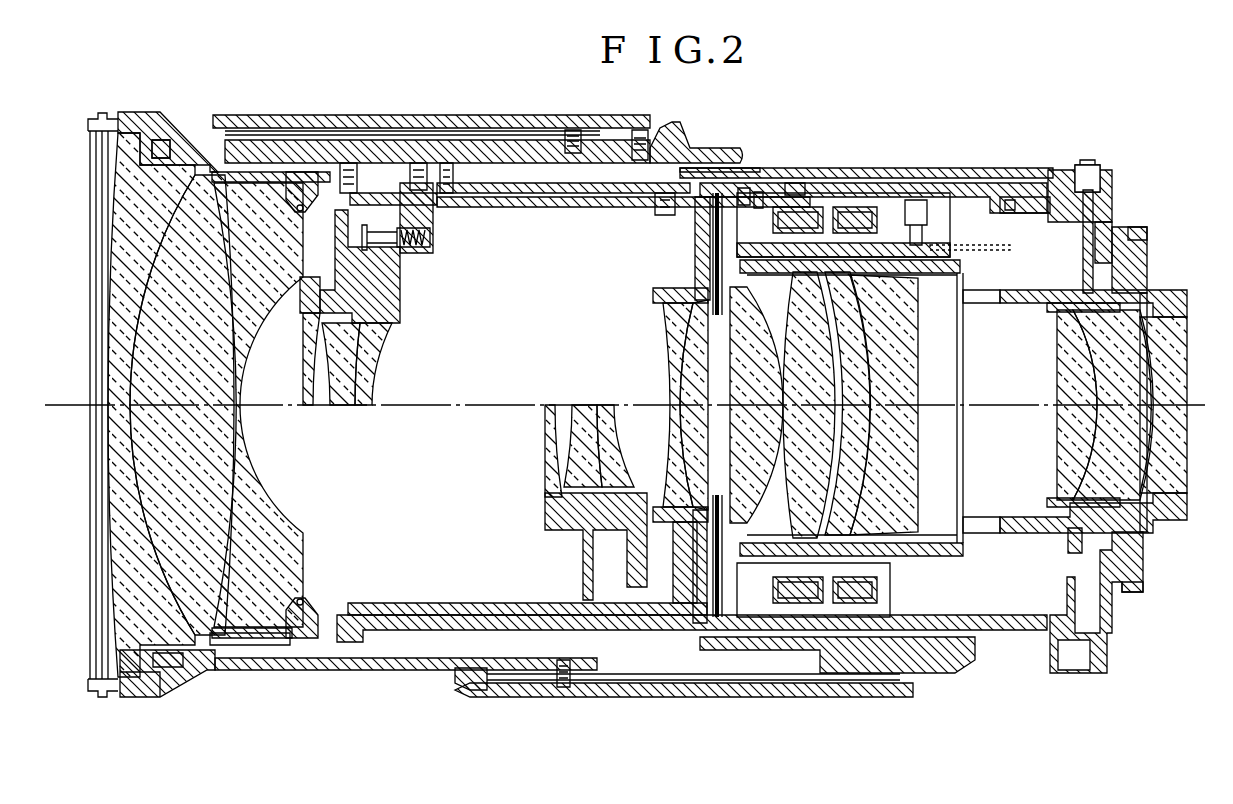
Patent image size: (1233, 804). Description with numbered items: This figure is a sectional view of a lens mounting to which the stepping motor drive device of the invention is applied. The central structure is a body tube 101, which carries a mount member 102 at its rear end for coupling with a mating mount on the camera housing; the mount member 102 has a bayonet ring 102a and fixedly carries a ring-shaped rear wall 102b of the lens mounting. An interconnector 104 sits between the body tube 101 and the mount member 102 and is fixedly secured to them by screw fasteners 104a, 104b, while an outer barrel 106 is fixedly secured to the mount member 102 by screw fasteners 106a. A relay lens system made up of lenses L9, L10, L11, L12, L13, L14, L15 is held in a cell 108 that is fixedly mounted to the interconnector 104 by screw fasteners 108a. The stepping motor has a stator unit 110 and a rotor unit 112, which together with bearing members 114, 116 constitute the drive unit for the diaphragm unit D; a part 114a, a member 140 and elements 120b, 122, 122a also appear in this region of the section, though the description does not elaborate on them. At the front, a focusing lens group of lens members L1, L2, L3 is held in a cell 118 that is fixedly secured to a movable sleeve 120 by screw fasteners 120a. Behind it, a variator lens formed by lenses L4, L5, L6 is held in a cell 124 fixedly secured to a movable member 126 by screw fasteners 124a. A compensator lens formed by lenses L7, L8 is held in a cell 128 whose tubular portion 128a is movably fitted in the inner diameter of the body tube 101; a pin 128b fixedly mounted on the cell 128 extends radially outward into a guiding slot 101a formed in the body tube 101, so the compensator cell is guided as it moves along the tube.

The body tube 101 is at (258, 150).
The guiding slot 101a is at (693, 185).
The mount member 102 is at (1125, 228).
The bayonet ring 102a is at (1147, 238).
The ring-shaped rear wall 102b is at (1140, 558).
The interconnector 104 is at (1040, 183).
The screw fastener 104a is at (1023, 185).
The screw fastener 104b is at (1094, 197).
The outer barrel 106 is at (887, 168).
The screw fastener 106a is at (1087, 160).
The cell 108 is at (1155, 298).
The screw fastener 108a is at (1053, 308).
The stator unit 110 is at (843, 185).
The rotor unit 112 is at (855, 205).
The bearing member 114 is at (745, 193).
The drive pin 114a is at (758, 197).
The bearing member 116 is at (797, 185).
The cell 118 is at (155, 138).
The movable sleeve 120 is at (195, 140).
The screw fastener 120a is at (160, 697).
The fixing screw 120b is at (573, 133).
The zoom operation ring 122 is at (676, 123).
The zoom ring grip sleeve 122a is at (457, 128).
The cell 124 is at (383, 302).
The screw fastener 124a is at (423, 212).
The movable member 126 is at (437, 223).
The cell 128 is at (700, 258).
The tubular portion 128a is at (543, 207).
The pin 128b is at (663, 213).
The position detecting member 140 is at (917, 198).
The diaphragm unit D is at (717, 278).
The focusing lens member L1 is at (128, 262).
The focusing lens member L2 is at (152, 329).
The focusing lens member L3 is at (288, 225).
The variator lens L4 is at (315, 387).
The variator lens L5 is at (353, 378).
The variator lens L6 is at (377, 390).
The compensator lens L7 is at (667, 328).
The compensator lens L8 is at (693, 357).
The relay lens L9 is at (750, 370).
The relay lens L10 is at (902, 325).
The relay lens L11 is at (868, 348).
The relay lens L12 is at (890, 385).
The relay lens L13 is at (1058, 423).
The relay lens L14 is at (1117, 453).
The relay lens L15 is at (1167, 483).